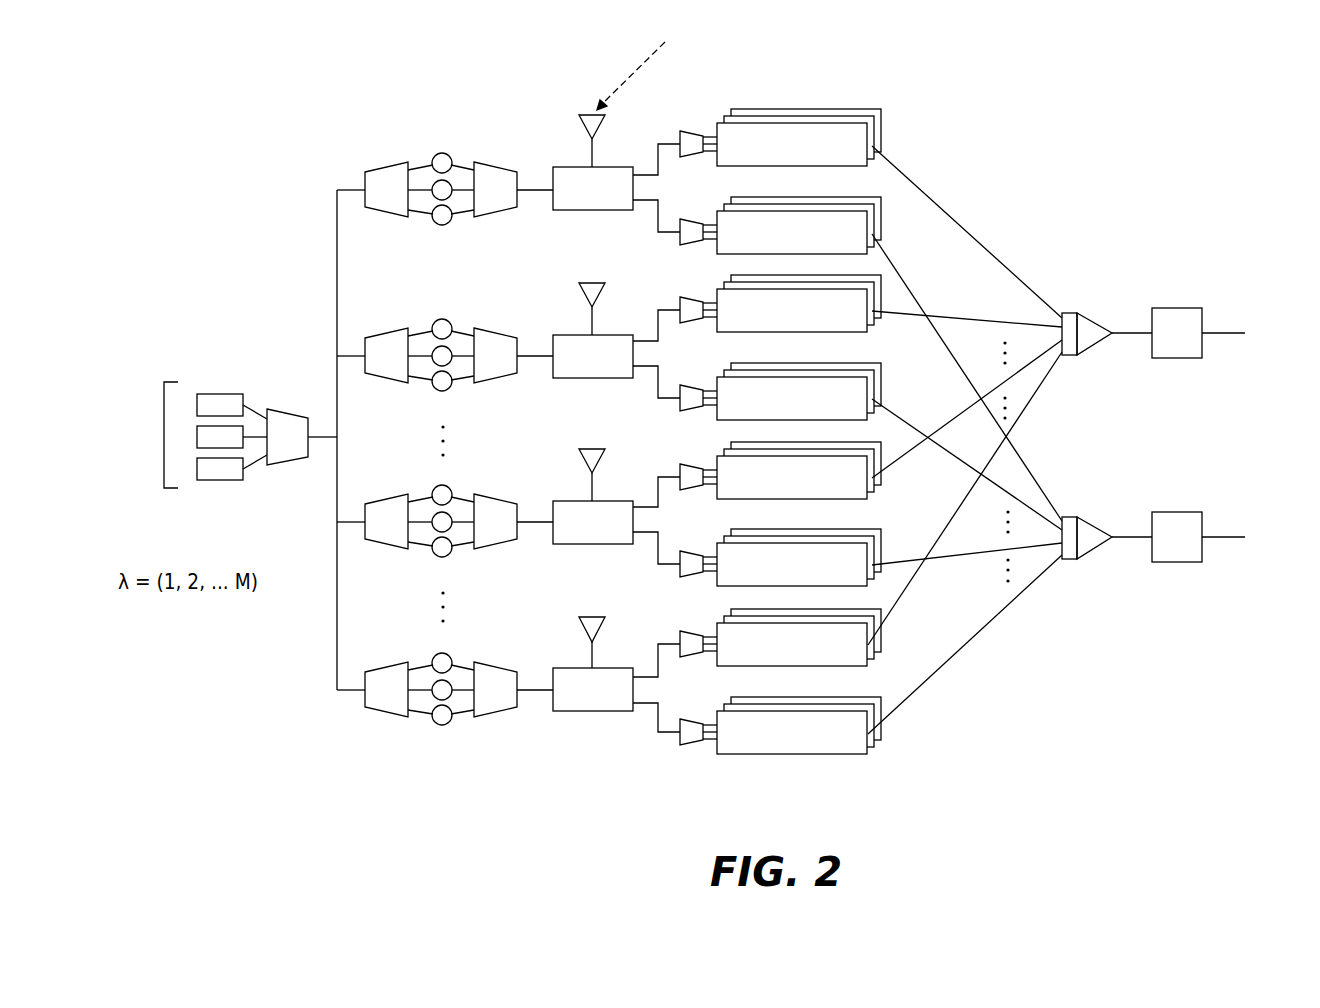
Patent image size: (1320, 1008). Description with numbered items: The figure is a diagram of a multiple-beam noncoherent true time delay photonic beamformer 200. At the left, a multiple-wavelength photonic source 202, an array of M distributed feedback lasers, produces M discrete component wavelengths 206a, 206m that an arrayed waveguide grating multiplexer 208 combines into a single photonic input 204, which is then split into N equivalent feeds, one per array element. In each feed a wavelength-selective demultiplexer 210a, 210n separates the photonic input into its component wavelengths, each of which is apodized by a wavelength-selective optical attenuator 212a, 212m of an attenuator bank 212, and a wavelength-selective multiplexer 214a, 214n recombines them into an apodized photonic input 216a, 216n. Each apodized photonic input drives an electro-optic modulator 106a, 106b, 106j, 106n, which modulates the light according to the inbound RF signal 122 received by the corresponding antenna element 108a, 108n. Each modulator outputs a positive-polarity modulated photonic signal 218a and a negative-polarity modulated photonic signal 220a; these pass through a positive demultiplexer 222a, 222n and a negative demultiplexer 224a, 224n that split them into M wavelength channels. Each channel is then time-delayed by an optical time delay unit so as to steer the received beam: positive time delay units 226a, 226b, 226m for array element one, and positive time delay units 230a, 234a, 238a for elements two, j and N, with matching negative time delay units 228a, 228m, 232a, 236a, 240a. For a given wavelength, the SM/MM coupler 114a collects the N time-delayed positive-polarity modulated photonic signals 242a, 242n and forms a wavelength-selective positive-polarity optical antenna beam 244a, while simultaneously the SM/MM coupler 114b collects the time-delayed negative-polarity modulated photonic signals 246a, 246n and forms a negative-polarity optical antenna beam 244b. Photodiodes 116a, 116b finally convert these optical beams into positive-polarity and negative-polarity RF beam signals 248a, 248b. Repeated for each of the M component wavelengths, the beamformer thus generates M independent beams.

The multiple-beam photonic beamformer 200 is at (176, 107).
The multiple-wavelength photonic source 202 is at (162, 435).
The photonic input 204 is at (337, 298).
The component wavelength 206a is at (253, 400).
The component wavelength 206m is at (252, 466).
The arrayed waveguide grating multiplexer 208 is at (291, 424).
The wavelength-selective demultiplexer 210a is at (378, 176).
The wavelength-selective demultiplexer 210n is at (388, 711).
The wavelength-selective optical attenuator bank 212 is at (459, 124).
The wavelength-selective optical attenuator 212a is at (438, 153).
The wavelength-selective optical attenuator 212m is at (441, 226).
The wavelength-selective multiplexer 214a is at (503, 200).
The wavelength-selective multiplexer 214n is at (500, 708).
The apodized photonic input 216a is at (535, 195).
The apodized photonic input 216n is at (531, 688).
The electro-optic modulator 106a is at (613, 200).
The electro-optic modulator 106b is at (613, 368).
The electro-optic modulator 106j is at (611, 534).
The electro-optic modulator 106n is at (613, 701).
The antenna element 108a is at (580, 122).
The antenna element 108n is at (583, 617).
The inbound RF signal 122 is at (631, 74).
The positive-polarity modulated photonic signal 218a is at (657, 162).
The negative-polarity modulated photonic signal 220a is at (657, 218).
The positive demultiplexer 222a is at (694, 140).
The positive demultiplexer 222n is at (694, 634).
The negative demultiplexer 224a is at (699, 243).
The negative demultiplexer 224n is at (693, 750).
The positive time delay unit 226a is at (839, 156).
The positive time delay unit 226b is at (755, 117).
The positive time delay unit 226m is at (822, 110).
The negative time delay unit 228a is at (839, 244).
The negative time delay unit 228m is at (858, 197).
The positive time delay unit 230a is at (839, 322).
The negative time delay unit 232a is at (839, 410).
The positive time delay unit 234a is at (839, 489).
The negative time delay unit 236a is at (839, 576).
The positive time delay unit 238a is at (839, 656).
The negative time delay unit 240a is at (839, 744).
The time-delayed positive-polarity modulated photonic signal 242a is at (940, 207).
The time-delayed positive-polarity modulated photonic signal 242n is at (1032, 402).
The time-delayed negative-polarity modulated photonic signal 246a is at (893, 265).
The time-delayed negative-polarity modulated photonic signal 246n is at (970, 640).
The SM/MM coupler 114a is at (1084, 324).
The SM/MM coupler 114b is at (1086, 541).
The photodiode 116a is at (1167, 308).
The photodiode 116b is at (1177, 563).
The positive-polarity optical antenna beam 244a is at (1130, 336).
The negative-polarity optical antenna beam 244b is at (1127, 534).
The positive-polarity RF beam signal 248a is at (1220, 335).
The negative-polarity RF beam signal 248b is at (1227, 537).